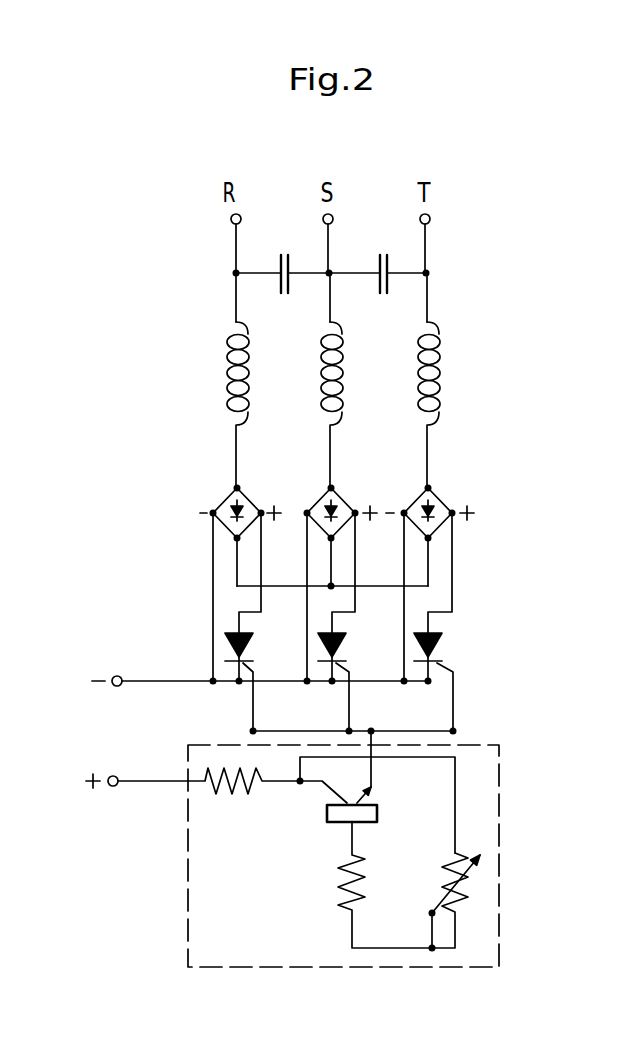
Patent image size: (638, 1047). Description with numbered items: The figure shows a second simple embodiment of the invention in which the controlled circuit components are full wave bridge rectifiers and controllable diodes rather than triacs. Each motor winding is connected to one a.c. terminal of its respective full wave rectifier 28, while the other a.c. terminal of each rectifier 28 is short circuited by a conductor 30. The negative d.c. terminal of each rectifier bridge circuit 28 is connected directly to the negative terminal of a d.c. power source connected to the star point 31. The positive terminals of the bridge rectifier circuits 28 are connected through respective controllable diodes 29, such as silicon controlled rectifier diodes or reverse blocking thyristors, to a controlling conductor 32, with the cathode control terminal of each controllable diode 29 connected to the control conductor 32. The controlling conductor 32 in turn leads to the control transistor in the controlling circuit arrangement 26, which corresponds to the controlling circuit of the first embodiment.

The controlling circuit arrangement 26 is at (505, 838).
The full wave rectifier 28 is at (226, 500).
The controllable diodes 29 is at (225, 638).
The conductor 30 is at (384, 584).
The star point 31 is at (138, 678).
The controlling conductor 32 is at (397, 729).